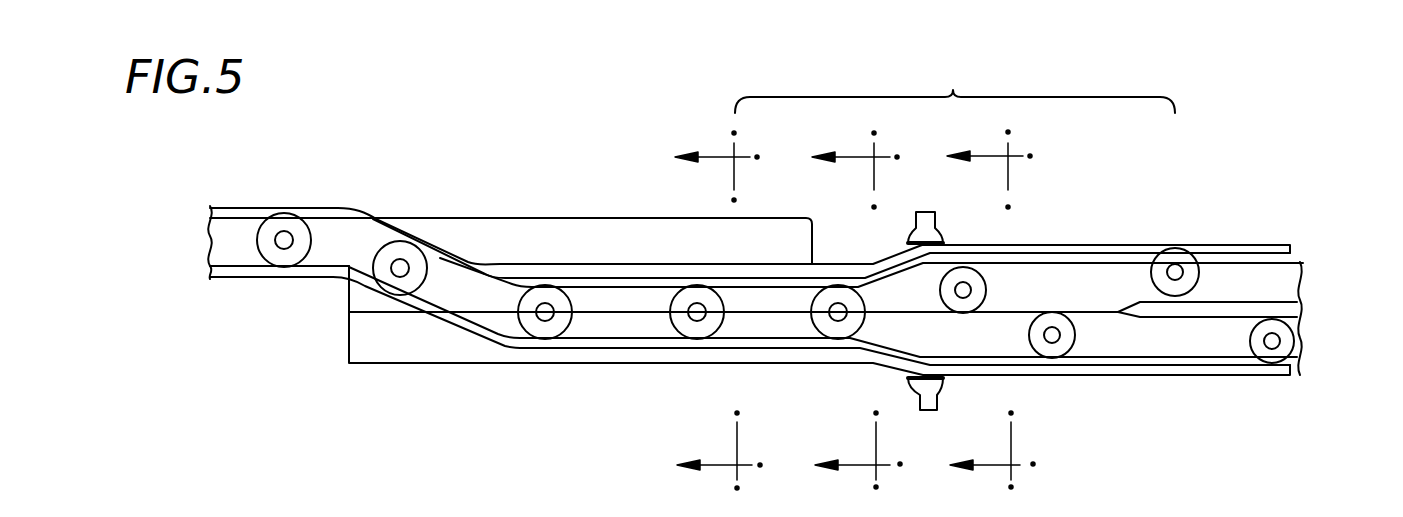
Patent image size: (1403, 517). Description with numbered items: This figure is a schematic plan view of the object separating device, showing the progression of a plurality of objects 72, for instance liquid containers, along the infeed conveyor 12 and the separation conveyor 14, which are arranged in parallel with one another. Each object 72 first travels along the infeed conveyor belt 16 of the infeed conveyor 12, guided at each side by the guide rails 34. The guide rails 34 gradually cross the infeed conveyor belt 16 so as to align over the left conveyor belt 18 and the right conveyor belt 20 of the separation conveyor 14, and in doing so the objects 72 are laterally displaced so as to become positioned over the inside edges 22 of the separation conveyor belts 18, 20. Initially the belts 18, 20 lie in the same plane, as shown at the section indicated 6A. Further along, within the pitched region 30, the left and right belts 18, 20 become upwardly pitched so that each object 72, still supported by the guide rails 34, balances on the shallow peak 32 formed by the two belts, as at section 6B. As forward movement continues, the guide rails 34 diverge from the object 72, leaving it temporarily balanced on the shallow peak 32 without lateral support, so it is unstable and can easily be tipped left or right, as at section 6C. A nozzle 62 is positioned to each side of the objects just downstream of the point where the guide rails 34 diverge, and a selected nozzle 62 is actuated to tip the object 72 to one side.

The infeed conveyor 12 is at (395, 200).
The separation conveyor 14 is at (503, 417).
The conveyor belt 16 is at (570, 227).
The first or left conveyor belt 18 is at (354, 297).
The second or right conveyor belt 20 is at (354, 345).
The inside edge 22 is at (884, 308).
The pitched region 30 is at (955, 85).
The shallow peak 32 is at (920, 337).
The guide rails 34 is at (256, 206).
The nozzle 62 is at (925, 212).
The object 72 is at (420, 258).
The section line 6A is at (731, 312).
The section line 6B is at (869, 312).
The section line 6C is at (1004, 312).